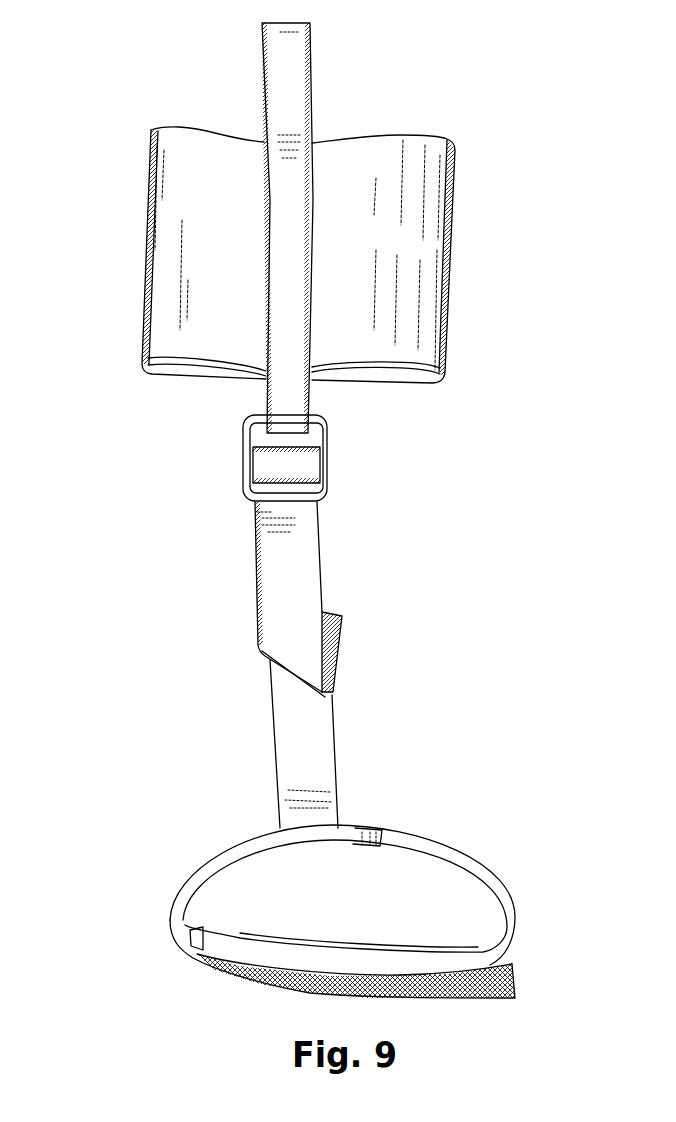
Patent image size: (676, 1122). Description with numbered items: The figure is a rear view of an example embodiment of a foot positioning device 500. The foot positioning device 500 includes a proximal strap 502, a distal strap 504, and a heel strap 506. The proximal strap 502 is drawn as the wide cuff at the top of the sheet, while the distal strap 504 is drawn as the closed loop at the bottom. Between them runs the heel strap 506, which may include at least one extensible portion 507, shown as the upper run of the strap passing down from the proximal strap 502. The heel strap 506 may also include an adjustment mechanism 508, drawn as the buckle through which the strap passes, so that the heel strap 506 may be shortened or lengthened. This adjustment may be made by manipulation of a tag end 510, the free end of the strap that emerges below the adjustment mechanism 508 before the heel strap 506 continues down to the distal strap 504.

The foot positioning device 500 is at (135, 82).
The proximal strap 502 is at (182, 282).
The distal strap 504 is at (167, 925).
The heel strap 506 is at (303, 755).
The extensible portion 507 is at (290, 386).
The adjustment mechanism 508 is at (327, 466).
The tag end 510 is at (297, 630).